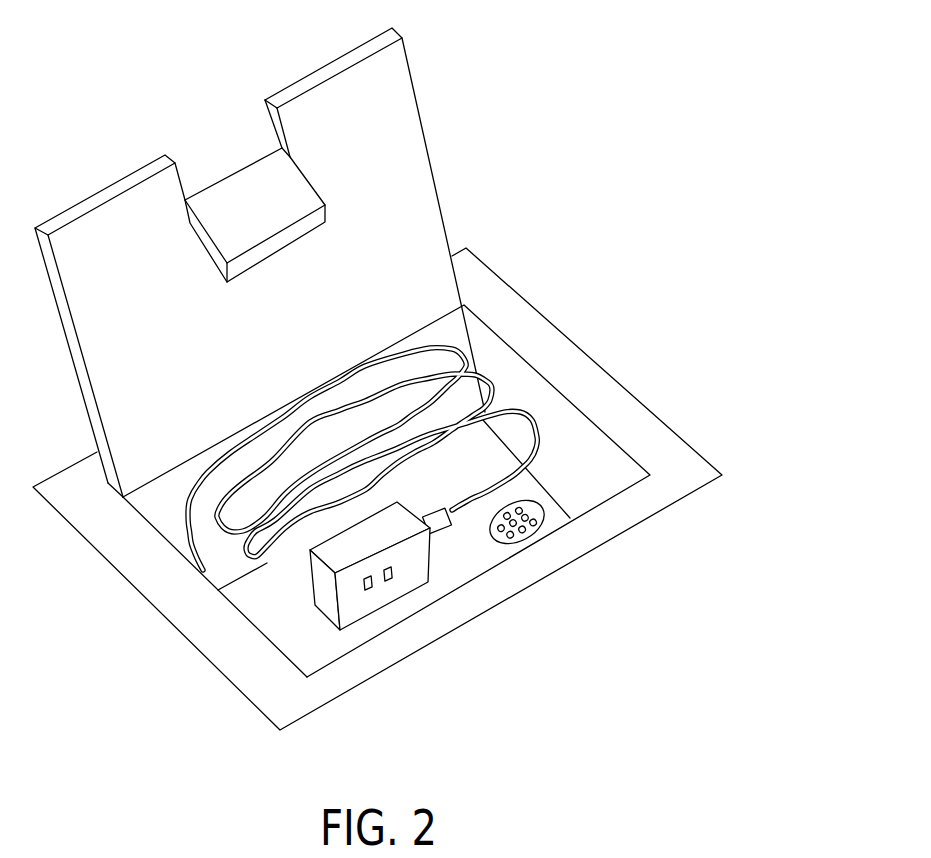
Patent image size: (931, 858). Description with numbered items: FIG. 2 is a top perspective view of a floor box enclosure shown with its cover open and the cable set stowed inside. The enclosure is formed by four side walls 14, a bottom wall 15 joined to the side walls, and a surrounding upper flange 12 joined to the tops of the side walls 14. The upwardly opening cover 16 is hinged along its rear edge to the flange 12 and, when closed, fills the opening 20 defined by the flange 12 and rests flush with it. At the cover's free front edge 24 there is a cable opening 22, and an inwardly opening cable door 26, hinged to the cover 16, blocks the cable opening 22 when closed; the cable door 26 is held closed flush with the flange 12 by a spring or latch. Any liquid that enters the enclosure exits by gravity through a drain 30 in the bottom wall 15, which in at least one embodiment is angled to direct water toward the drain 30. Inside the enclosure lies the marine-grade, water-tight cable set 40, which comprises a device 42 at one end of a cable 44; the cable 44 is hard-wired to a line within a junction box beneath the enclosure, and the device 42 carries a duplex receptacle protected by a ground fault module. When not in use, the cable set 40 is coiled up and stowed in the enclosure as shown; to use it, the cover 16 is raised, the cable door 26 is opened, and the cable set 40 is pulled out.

The upper flange 12 is at (650, 503).
The side walls 14 is at (600, 453).
The bottom wall 15 is at (297, 645).
The cover 16 is at (404, 106).
The opening 20 is at (575, 404).
The cable opening 22 is at (277, 128).
The free front edge 24 is at (110, 183).
The cable door 26 is at (300, 192).
The drain 30 is at (538, 533).
The cable set 40 is at (491, 372).
The device 42 is at (403, 595).
The cable 44 is at (533, 461).